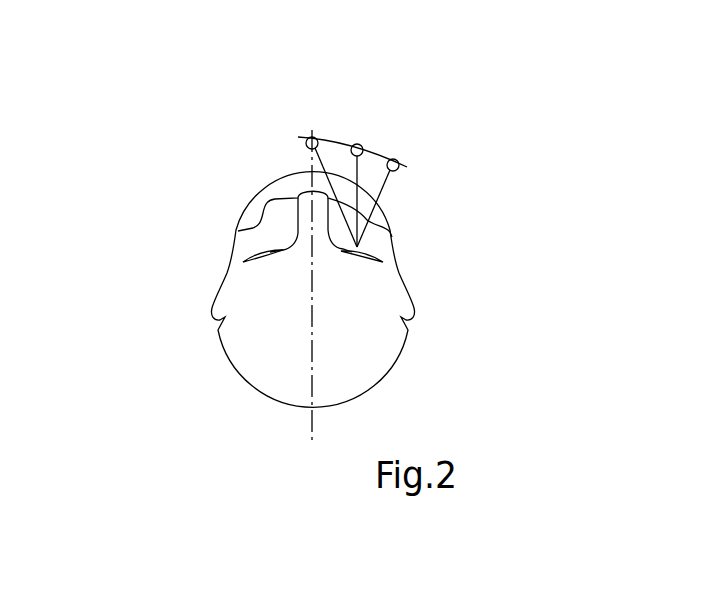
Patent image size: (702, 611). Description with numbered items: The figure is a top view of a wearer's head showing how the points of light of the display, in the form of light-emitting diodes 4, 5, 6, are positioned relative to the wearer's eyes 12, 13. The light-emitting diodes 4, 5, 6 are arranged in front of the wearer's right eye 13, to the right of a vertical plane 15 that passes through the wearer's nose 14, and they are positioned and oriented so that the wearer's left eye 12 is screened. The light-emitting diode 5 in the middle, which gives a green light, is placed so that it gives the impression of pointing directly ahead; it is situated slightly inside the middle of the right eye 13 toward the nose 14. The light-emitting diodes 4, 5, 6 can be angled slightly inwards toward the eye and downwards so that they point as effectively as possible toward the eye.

The light-emitting diode 4 is at (395, 159).
The light-emitting diode 5 is at (357, 144).
The light-emitting diode 6 is at (313, 136).
The left eye 12 is at (246, 231).
The right eye 13 is at (359, 252).
The nose 14 is at (307, 193).
The vertical plane 15 is at (310, 213).